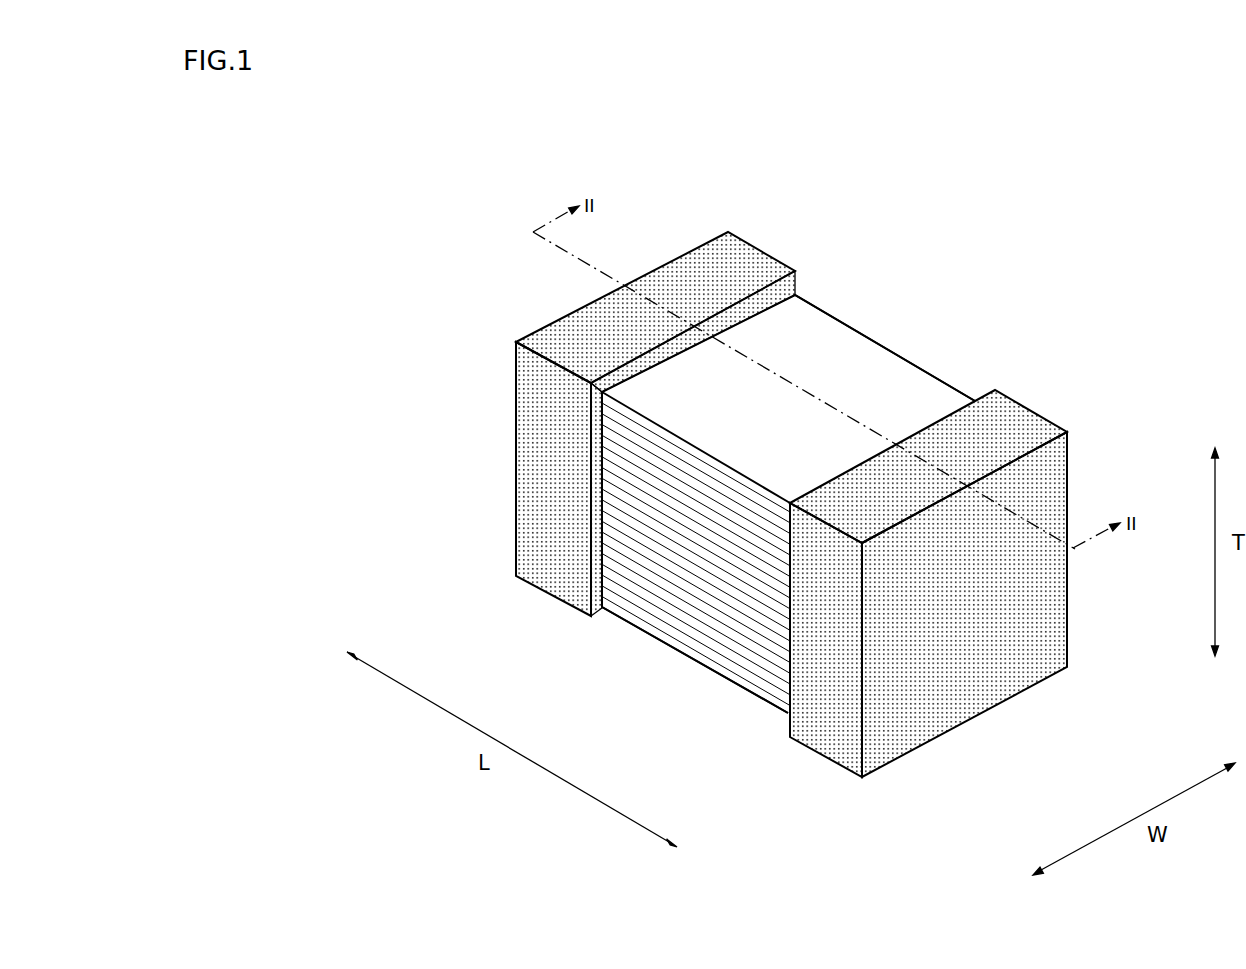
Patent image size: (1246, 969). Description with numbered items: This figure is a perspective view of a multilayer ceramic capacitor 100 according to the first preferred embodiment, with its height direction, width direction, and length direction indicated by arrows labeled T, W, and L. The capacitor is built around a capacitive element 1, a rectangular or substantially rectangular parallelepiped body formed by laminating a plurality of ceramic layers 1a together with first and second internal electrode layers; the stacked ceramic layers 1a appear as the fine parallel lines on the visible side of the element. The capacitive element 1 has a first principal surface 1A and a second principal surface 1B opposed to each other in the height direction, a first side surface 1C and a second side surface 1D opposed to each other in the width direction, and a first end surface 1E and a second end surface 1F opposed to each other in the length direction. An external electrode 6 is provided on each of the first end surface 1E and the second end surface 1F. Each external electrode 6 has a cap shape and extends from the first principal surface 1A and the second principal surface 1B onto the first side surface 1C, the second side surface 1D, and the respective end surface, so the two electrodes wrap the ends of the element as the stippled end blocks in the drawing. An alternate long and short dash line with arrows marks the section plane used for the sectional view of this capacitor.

The multilayer ceramic capacitor 100 is at (401, 110).
The capacitive element 1 is at (784, 452).
The first principal surface 1A is at (662, 658).
The second principal surface 1B is at (818, 362).
The first side surface 1C is at (665, 593).
The second side surface 1D is at (932, 356).
The first end surface 1E is at (976, 615).
The second end surface 1F is at (540, 304).
The ceramic layer 1a is at (740, 655).
The external electrode 6 is at (525, 453).